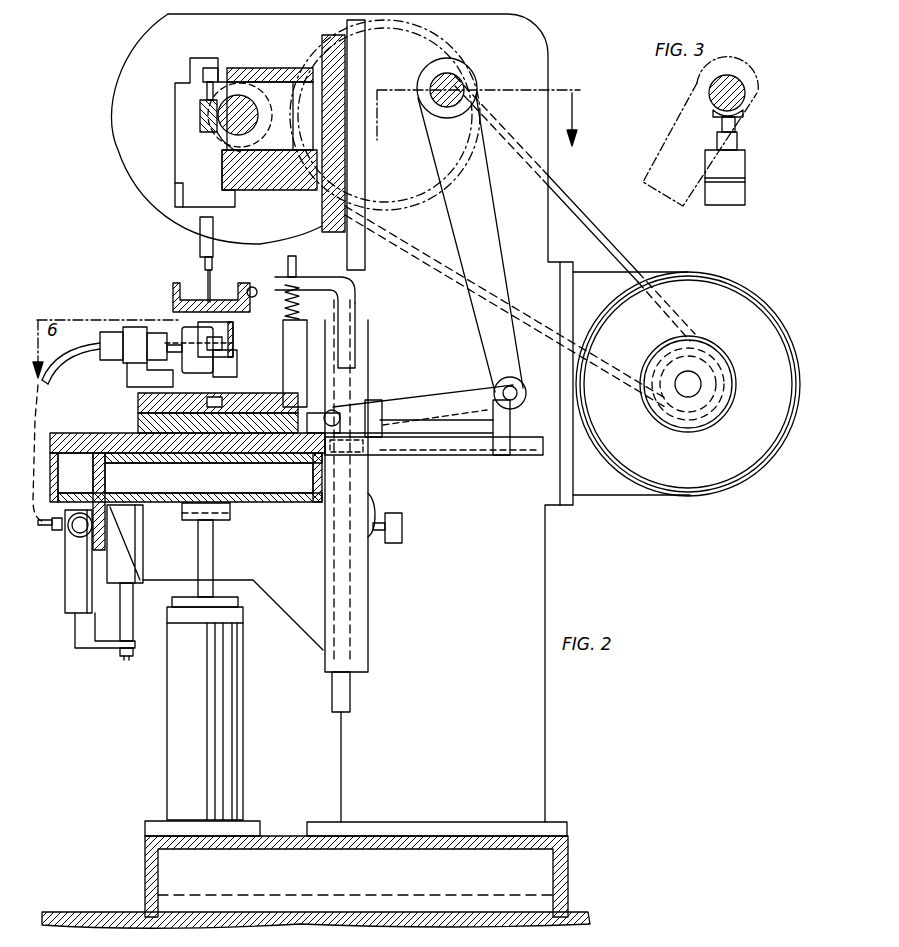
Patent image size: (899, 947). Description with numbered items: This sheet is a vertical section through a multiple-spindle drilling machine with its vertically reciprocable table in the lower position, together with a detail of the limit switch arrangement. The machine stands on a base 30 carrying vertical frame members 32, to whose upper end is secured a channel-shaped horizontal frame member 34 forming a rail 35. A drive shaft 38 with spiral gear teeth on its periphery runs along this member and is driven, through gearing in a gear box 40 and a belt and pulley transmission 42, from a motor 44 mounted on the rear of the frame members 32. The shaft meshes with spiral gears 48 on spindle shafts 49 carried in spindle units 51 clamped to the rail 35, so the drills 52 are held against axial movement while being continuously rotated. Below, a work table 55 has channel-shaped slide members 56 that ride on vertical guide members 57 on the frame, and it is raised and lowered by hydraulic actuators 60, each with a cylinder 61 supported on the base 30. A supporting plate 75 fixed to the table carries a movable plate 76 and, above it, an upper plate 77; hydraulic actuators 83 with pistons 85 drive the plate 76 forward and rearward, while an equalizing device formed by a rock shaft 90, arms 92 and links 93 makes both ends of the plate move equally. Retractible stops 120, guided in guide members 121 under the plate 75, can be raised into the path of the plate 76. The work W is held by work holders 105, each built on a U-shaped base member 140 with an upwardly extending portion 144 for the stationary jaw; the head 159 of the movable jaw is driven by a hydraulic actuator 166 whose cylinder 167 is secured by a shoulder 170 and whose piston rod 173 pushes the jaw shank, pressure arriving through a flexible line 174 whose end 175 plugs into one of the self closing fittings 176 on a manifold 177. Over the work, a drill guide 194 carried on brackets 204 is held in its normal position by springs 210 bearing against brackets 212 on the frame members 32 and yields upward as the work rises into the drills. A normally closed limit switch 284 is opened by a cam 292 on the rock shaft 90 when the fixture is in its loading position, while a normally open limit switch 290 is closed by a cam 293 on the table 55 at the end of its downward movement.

In FIG. 2, the base 30 is at (145, 873).
In FIG. 2, the vertical frame members 32 is at (548, 566).
In FIG. 2, the horizontal frame member 34 is at (277, 68).
In FIG. 2, the rail 35 is at (238, 193).
In FIG. 2, the drive shaft 38 is at (233, 95).
In FIG. 2, the gear box 40 is at (127, 80).
In FIG. 2, the belt and pulley transmission 42 is at (548, 180).
In FIG. 2, the motor 44 is at (712, 473).
In FIG. 2, the spiral gears 48 is at (200, 115).
In FIG. 2, the spindle shafts 49 is at (200, 218).
In FIG. 2, the spindle units 51 is at (175, 72).
In FIG. 2, the drills 52 is at (205, 277).
In FIG. 2, the work table 55 is at (163, 535).
In FIG. 2, the slide members 56 is at (255, 580).
In FIG. 2, the vertical guide members 57 is at (370, 612).
In FIG. 2, the hydraulic actuators 60 is at (162, 722).
In FIG. 2, the cylinder 61 is at (240, 733).
In FIG. 2, the supporting plate 75 is at (186, 427).
In FIG. 2, the movable plate 76 is at (146, 420).
In FIG. 2, the upper plate 77 is at (138, 402).
In FIG. 2, the hydraulic actuators 83 is at (407, 410).
In FIG. 2, the pistons 85 is at (186, 501).
In FIG. 2, the rock shaft 90 is at (440, 82).
In FIG. 3, the rock shaft 90 is at (747, 87).
In FIG. 2, the arms 92 is at (483, 230).
In FIG. 3, the arms 92 is at (672, 125).
In FIG. 2, the links 93 is at (453, 394).
In FIG. 2, the work holders 105 is at (238, 330).
In FIG. 2, the work W is at (247, 348).
In FIG. 2, the retractible stops 120 is at (73, 633).
In FIG. 2, the guide members 121 is at (75, 601).
In FIG. 2, the base member 140 is at (245, 450).
In FIG. 2, the upwardly extending portion 144 is at (303, 384).
In FIG. 2, the head 159 is at (199, 402).
In FIG. 2, the hydraulic actuator 166 is at (136, 298).
In FIG. 2, the cylinder 167 is at (116, 317).
In FIG. 2, the shoulder 170 is at (127, 373).
In FIG. 2, the rod 173 is at (153, 379).
In FIG. 2, the flexible line 174 is at (62, 367).
In FIG. 2, the end 175 is at (57, 530).
In FIG. 2, the self closing fittings 176 is at (76, 476).
In FIG. 2, the manifold 177 is at (90, 534).
In FIG. 2, the drill guide 194 is at (163, 294).
In FIG. 2, the brackets 204 is at (262, 300).
In FIG. 2, the springs 210 is at (330, 314).
In FIG. 2, the brackets 212 is at (362, 279).
In FIG. 3, the normally closed limit switch 284 is at (728, 172).
In FIG. 2, the normally open limit switch 290 is at (402, 527).
In FIG. 3, the cam 292 is at (745, 118).
In FIG. 2, the cam 293 is at (377, 497).